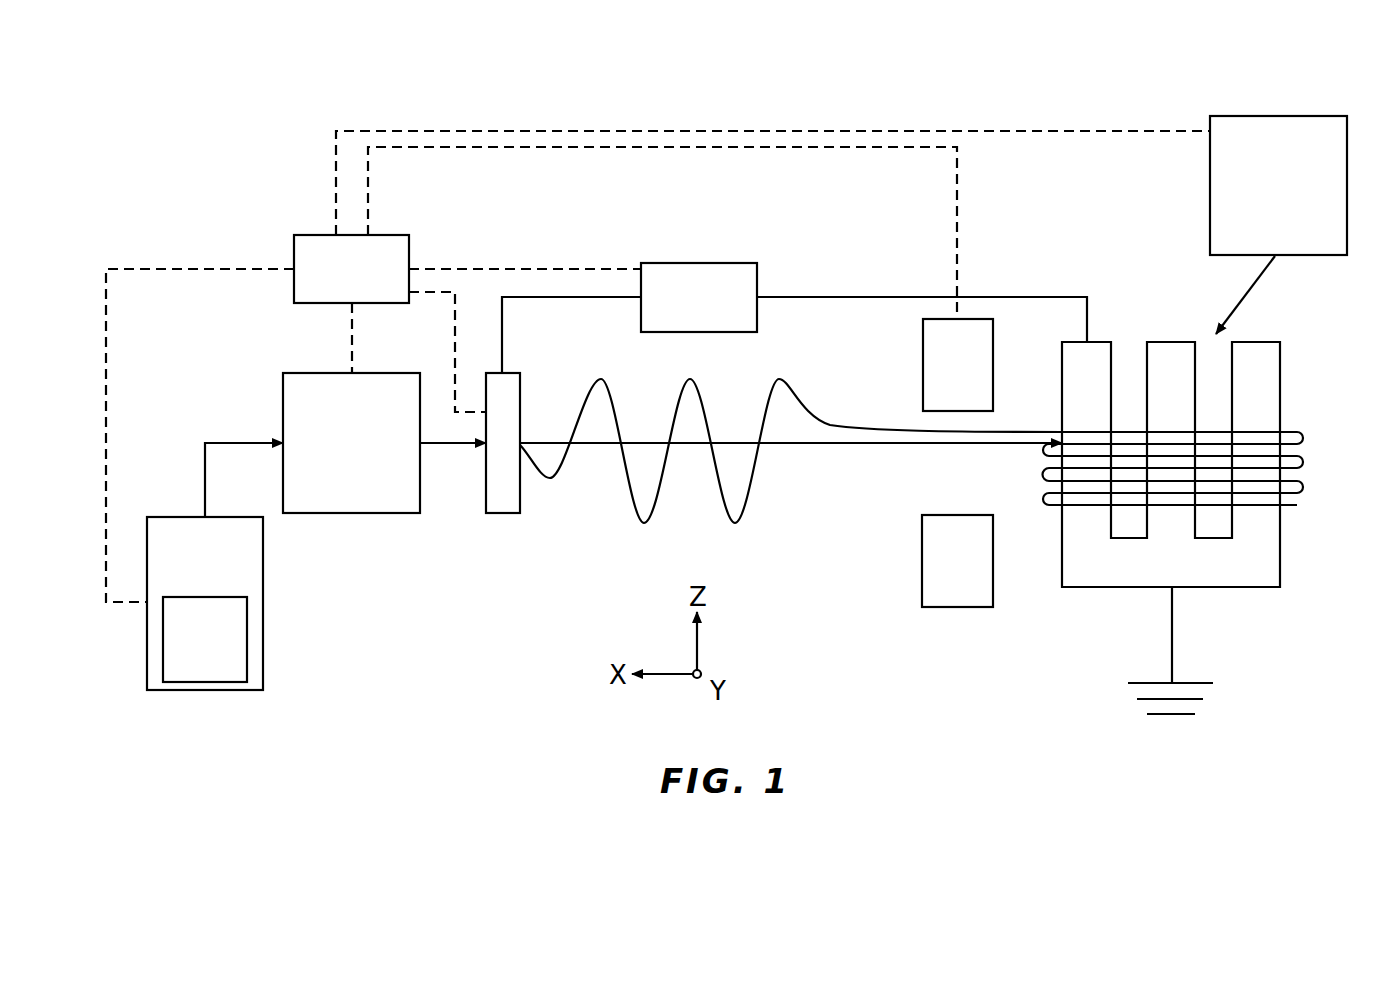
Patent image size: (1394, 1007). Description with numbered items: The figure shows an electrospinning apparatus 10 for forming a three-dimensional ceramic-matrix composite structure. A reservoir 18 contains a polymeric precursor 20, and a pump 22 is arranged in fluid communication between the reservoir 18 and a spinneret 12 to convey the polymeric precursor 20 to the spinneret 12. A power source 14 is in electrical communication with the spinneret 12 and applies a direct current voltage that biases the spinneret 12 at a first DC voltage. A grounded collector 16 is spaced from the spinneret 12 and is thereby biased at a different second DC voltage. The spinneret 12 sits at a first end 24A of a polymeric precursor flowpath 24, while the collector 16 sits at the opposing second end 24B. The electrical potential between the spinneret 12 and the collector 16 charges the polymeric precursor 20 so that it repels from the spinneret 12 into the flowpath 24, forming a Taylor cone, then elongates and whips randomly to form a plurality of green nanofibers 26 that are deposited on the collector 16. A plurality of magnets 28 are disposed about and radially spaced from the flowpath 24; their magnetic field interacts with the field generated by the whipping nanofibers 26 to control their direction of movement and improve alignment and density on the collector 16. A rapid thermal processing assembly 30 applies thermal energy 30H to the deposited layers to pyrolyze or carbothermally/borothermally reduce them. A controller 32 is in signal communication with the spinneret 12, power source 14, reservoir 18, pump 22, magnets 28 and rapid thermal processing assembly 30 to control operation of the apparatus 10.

The electrospinning apparatus 10 is at (228, 141).
The spinneret 12 is at (503, 515).
The power source 14 is at (708, 263).
The collector 16 is at (1255, 590).
The reservoir 18 is at (263, 600).
The polymeric precursor 20 is at (188, 652).
The pump 22 is at (353, 515).
The polymeric precursor flowpath 24 is at (857, 447).
The first end 24A is at (530, 428).
The second end 24B is at (1058, 427).
The nanofibers 26 is at (1312, 487).
The magnets 28 is at (923, 368).
The rapid thermal processing assembly 30 is at (1210, 212).
The thermal energy 30H is at (1255, 293).
The controller 32 is at (392, 233).